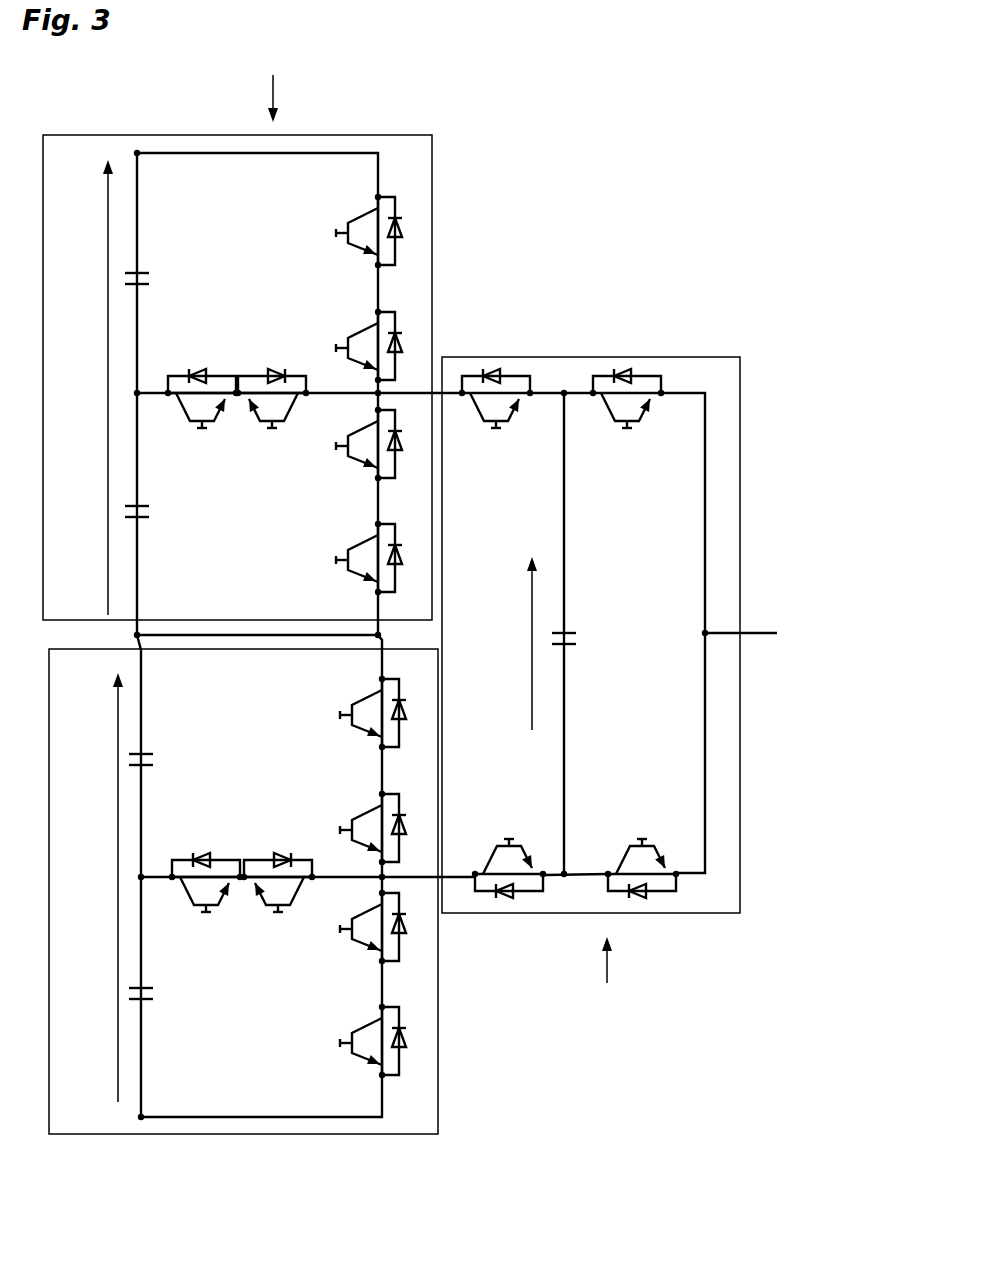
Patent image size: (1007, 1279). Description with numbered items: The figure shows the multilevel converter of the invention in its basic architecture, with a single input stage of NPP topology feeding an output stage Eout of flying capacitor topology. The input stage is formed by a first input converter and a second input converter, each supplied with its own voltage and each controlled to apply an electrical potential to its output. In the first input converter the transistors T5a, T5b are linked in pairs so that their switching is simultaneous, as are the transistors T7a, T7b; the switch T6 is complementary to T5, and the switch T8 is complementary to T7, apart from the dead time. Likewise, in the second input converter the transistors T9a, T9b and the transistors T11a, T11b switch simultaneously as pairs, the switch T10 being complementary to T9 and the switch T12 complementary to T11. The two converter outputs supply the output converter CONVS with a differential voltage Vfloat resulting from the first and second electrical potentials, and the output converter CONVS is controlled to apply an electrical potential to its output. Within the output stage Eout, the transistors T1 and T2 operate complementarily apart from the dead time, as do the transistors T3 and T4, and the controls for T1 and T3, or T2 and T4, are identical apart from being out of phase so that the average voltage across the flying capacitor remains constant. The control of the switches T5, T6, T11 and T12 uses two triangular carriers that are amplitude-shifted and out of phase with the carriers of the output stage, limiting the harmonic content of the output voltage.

The transistor T1 is at (633, 403).
The transistor T2 is at (649, 865).
The transistor T3 is at (500, 403).
The transistor T4 is at (516, 865).
The transistor T5a is at (362, 231).
The transistor T5b is at (362, 342).
The transistor T6 is at (272, 418).
The transistor T7a is at (356, 444).
The transistor T7b is at (356, 558).
The transistor T8 is at (202, 418).
The transistor T9a is at (362, 713).
The transistor T9b is at (366, 828).
The transistor T10 is at (271, 890).
The transistor T11a is at (360, 931).
The transistor T11b is at (360, 1045).
The transistor T12 is at (197, 890).
The output converter CONVS is at (572, 357).
The differential voltage Vfloat is at (512, 643).
The output stage Eout is at (608, 980).